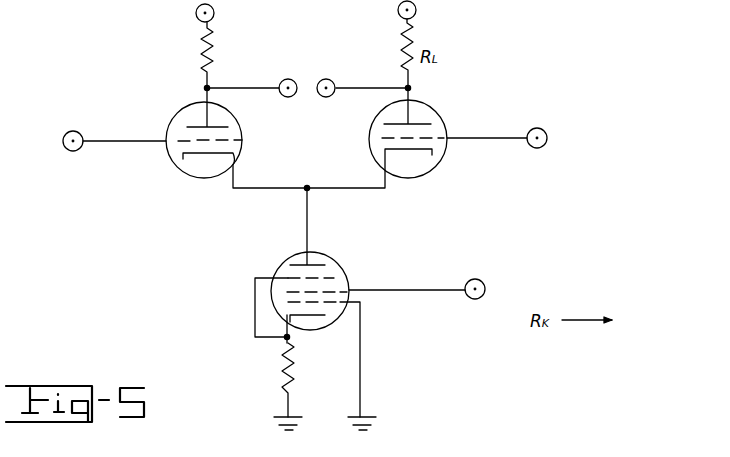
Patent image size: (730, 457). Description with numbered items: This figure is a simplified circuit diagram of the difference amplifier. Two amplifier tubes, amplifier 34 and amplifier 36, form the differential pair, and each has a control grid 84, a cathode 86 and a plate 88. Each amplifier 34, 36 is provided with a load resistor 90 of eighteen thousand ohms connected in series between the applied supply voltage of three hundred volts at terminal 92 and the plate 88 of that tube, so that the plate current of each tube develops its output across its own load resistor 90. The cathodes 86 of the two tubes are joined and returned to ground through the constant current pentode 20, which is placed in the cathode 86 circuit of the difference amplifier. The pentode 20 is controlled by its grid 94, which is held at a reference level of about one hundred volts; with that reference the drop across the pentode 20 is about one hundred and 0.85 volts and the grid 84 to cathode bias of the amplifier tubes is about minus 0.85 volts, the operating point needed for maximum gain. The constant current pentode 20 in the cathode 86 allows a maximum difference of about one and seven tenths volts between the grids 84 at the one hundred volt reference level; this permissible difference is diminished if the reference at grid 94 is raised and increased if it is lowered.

The constant current pentode 20 is at (343, 270).
The amplifier 34 is at (188, 176).
The amplifier 36 is at (433, 171).
The grid 84 is at (227, 141).
The cathode 86 is at (236, 158).
The plate 88 is at (220, 126).
The load resistor 90 is at (203, 57).
The terminal 92 is at (216, 11).
The grid 94 is at (328, 292).